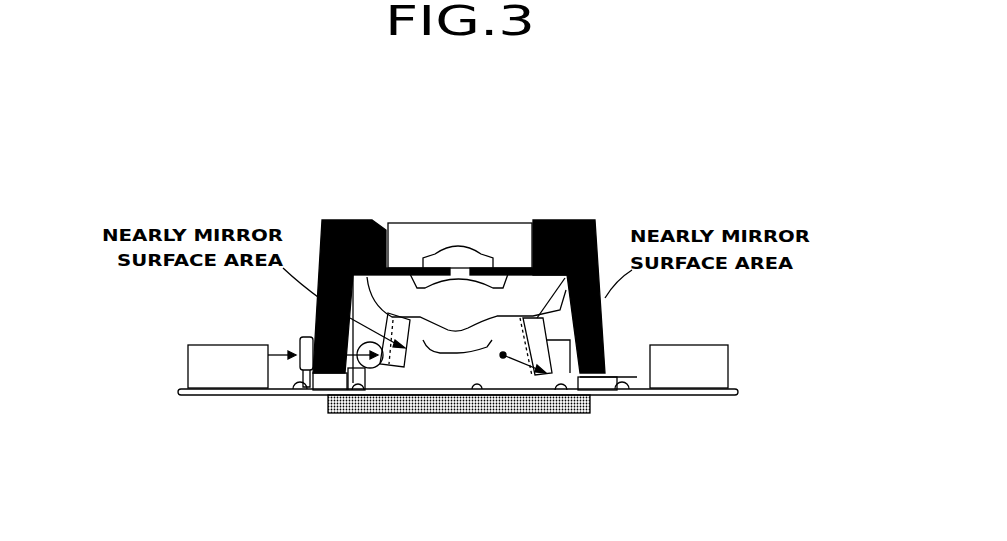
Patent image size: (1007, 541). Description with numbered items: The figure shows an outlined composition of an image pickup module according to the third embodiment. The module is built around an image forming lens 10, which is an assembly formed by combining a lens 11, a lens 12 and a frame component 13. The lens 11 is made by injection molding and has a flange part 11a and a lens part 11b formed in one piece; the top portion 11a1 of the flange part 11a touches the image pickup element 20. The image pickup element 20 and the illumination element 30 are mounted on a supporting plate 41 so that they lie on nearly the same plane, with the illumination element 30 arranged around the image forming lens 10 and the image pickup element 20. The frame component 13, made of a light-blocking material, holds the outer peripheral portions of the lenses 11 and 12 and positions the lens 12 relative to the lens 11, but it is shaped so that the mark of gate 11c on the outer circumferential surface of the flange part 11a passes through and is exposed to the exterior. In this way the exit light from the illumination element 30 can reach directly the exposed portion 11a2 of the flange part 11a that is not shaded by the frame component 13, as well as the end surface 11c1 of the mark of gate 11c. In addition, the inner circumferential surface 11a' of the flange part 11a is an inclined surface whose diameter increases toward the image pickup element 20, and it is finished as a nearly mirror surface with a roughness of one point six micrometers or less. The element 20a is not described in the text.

The image forming lens 10 is at (602, 134).
The lens 11 is at (515, 300).
The flange part 11a is at (500, 386).
The inner circumferential surface 11a' is at (460, 211).
The top portion 11a1 is at (350, 412).
The exposed portion 11a2 is at (358, 335).
The lens part 11b is at (462, 333).
The mark of gate 11c is at (300, 338).
The end surface 11c1 is at (300, 368).
The lens 12 is at (434, 237).
The frame component 13 is at (353, 216).
The image pickup element 20 is at (400, 413).
The substrate projection 20a is at (483, 397).
The illumination element 30 is at (218, 350).
The supporting plate 41 is at (300, 392).